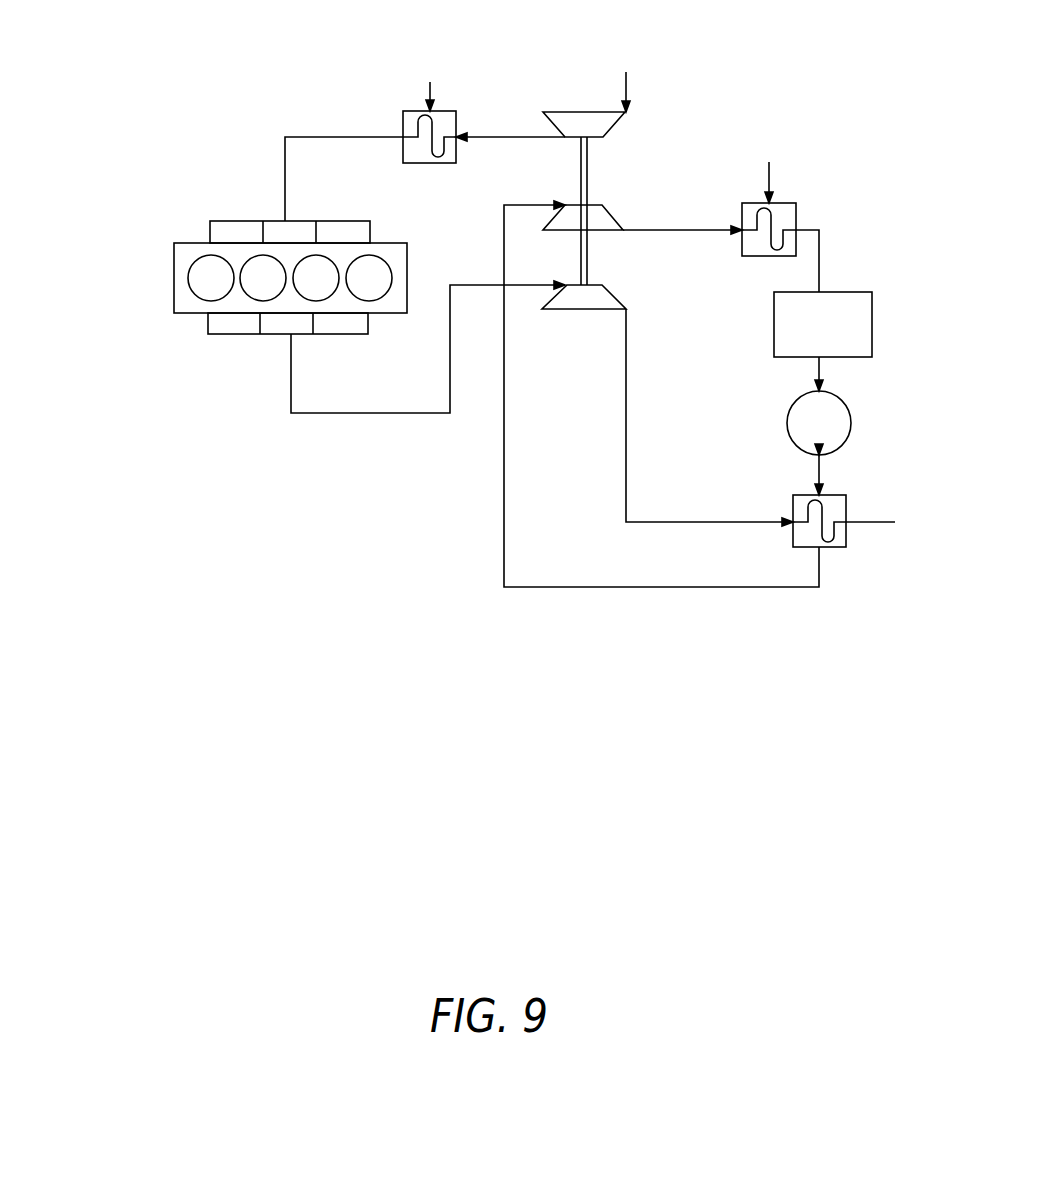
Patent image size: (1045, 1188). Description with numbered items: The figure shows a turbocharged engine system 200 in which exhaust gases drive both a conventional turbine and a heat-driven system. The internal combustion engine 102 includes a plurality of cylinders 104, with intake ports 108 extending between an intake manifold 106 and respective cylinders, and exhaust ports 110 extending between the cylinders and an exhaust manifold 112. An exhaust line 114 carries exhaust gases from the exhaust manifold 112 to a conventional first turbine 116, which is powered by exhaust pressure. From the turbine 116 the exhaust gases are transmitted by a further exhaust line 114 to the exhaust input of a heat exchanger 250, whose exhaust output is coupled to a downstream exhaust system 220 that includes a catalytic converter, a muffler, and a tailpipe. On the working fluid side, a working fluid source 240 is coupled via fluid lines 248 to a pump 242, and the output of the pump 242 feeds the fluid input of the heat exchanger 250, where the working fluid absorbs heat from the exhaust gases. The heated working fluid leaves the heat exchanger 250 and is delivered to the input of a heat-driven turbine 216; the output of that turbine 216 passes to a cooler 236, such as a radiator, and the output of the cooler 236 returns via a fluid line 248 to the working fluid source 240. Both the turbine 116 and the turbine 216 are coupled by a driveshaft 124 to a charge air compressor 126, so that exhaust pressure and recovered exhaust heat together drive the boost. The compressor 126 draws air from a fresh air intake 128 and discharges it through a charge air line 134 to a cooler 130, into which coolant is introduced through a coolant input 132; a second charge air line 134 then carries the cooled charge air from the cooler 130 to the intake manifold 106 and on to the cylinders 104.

The turbocharged engine system 200 is at (338, 58).
The internal combustion engine 102 is at (226, 280).
The cylinders 104 is at (197, 279).
The intake manifold 106 is at (226, 219).
The intake ports 108 is at (264, 230).
The exhaust ports 110 is at (207, 321).
The exhaust manifold 112 is at (273, 337).
The exhaust line 114 is at (413, 413).
The first turbine 116 is at (578, 305).
The driveshaft 124 is at (589, 187).
The compressor 126 is at (585, 122).
The fresh air intake 128 is at (628, 84).
The cooler 130 is at (447, 118).
The coolant input 132 is at (428, 90).
The charge air line 134 is at (305, 136).
The turbine 216 is at (596, 220).
The downstream exhaust system 220 is at (872, 521).
The cooler 236 is at (785, 215).
The working fluid source 240 is at (855, 298).
The pump 242 is at (797, 428).
The fluid lines 248 is at (505, 505).
The heat exchanger 250 is at (838, 535).